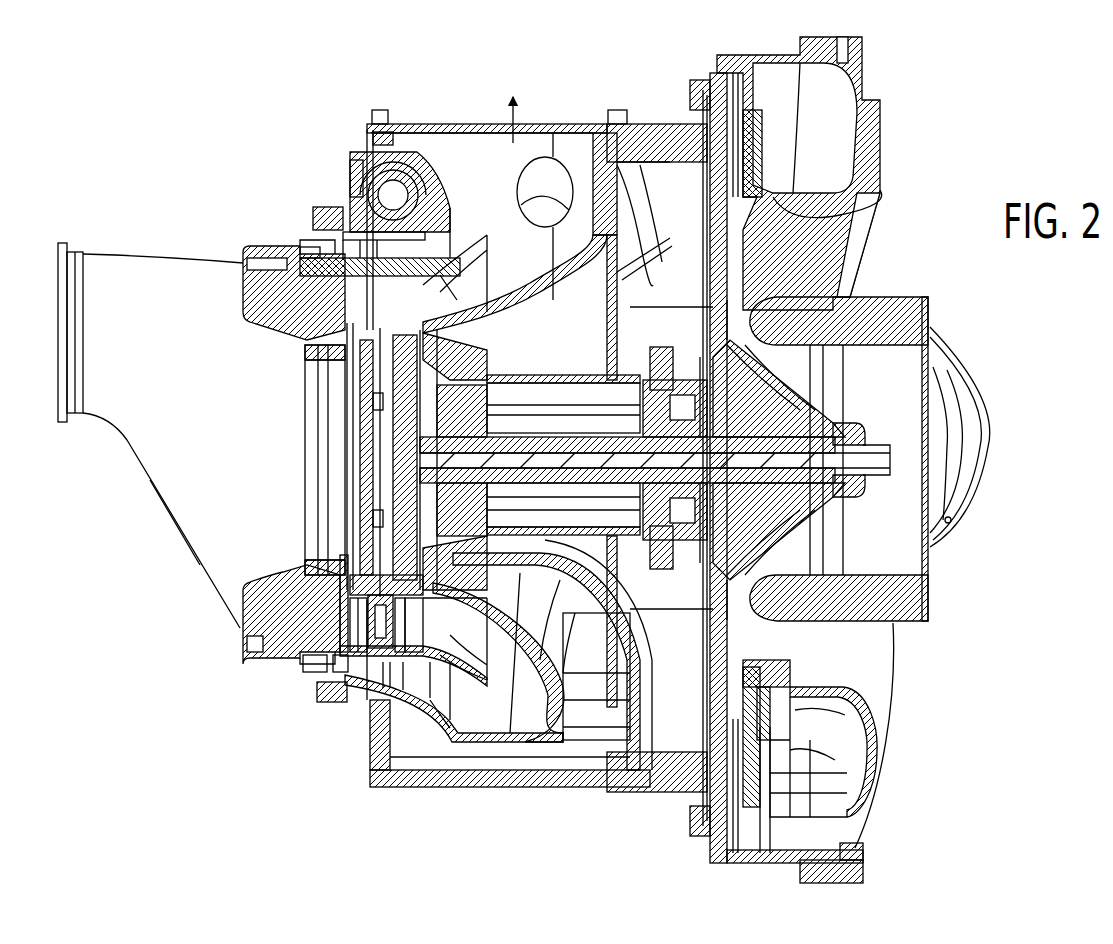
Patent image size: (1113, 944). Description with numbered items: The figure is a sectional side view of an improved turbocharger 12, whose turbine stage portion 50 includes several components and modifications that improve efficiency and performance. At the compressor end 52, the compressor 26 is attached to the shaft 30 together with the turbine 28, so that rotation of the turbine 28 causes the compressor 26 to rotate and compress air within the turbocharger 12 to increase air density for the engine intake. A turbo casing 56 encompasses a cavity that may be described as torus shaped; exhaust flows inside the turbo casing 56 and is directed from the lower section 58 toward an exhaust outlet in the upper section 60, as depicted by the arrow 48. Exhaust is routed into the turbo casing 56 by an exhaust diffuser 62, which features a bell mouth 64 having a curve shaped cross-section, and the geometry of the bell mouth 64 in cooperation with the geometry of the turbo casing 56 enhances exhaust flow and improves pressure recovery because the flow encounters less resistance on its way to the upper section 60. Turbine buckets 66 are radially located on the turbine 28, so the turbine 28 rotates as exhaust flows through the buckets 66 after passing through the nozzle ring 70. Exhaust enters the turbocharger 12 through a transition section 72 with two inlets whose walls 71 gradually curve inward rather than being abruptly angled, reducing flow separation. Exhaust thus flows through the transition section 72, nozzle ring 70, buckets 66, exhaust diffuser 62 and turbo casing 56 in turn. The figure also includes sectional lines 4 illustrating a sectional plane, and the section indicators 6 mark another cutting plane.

The turbocharger 12 is at (592, 80).
The sectional lines 4 is at (502, 110).
The section line 6- 6 is at (632, 787).
The compressor 26 is at (797, 397).
The turbine 28 is at (497, 500).
The shaft 30 is at (722, 503).
The arrow 48 is at (520, 112).
The turbine stage portion 50 is at (478, 100).
The compressor end 52 is at (906, 632).
The turbo casing 56 is at (565, 258).
The lower section 58 is at (463, 720).
The upper section 60 is at (455, 140).
The exhaust diffuser 62 is at (345, 212).
The bell mouth 64 is at (478, 242).
The turbine buckets 66 is at (423, 637).
The nozzle ring 70 is at (347, 628).
The walls 71 is at (178, 524).
The transition section 72 is at (133, 437).